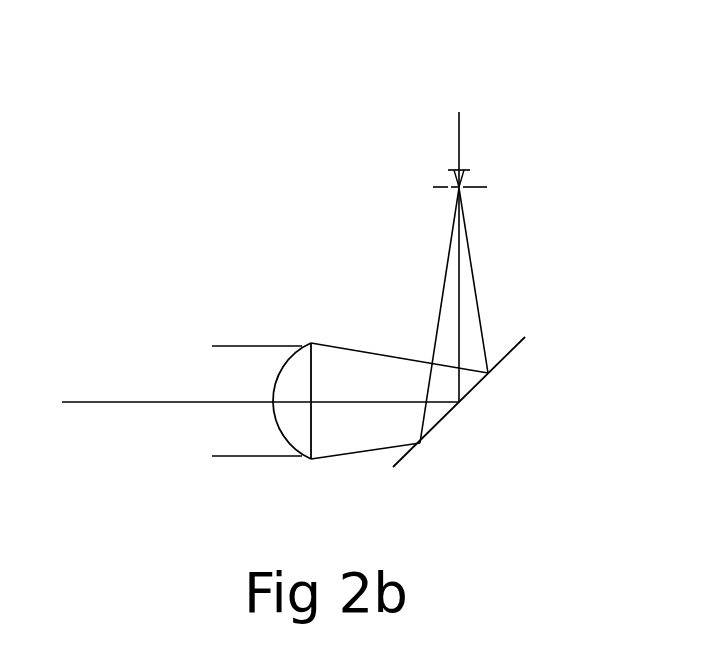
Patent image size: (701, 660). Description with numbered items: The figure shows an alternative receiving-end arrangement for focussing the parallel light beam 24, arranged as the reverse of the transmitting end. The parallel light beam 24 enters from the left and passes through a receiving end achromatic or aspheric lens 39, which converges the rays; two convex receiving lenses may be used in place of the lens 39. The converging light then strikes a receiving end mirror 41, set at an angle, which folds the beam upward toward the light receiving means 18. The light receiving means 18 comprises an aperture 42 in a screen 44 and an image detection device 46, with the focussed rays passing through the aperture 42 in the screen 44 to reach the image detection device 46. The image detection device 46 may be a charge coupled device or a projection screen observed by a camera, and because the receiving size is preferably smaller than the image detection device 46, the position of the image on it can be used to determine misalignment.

The light receiving means 18 is at (510, 122).
The parallel light beam 24 is at (175, 367).
The receiving end achromatic or aspheric lens 39 is at (298, 437).
The receiving end mirror 41 is at (483, 392).
The aperture 42 is at (467, 192).
The screen 44 is at (488, 183).
The image detection device 46 is at (450, 165).